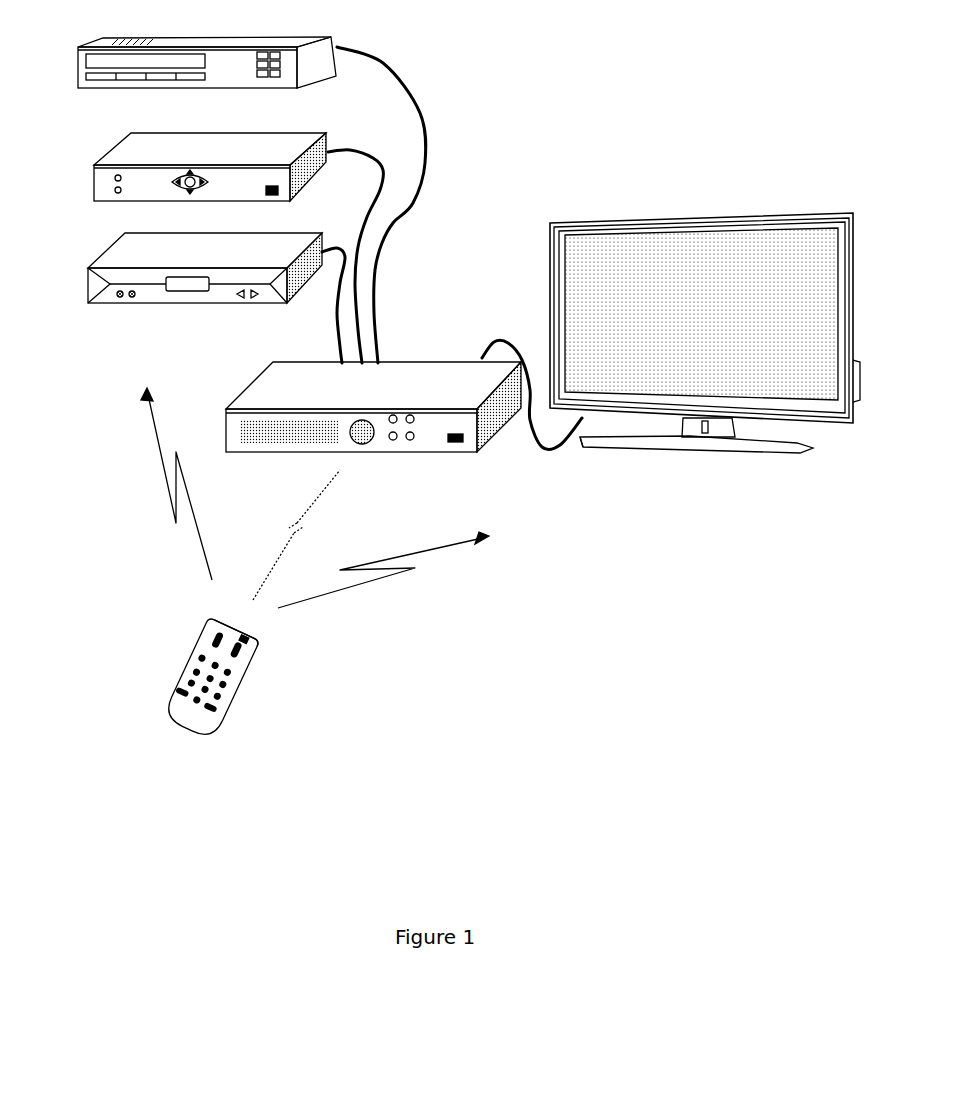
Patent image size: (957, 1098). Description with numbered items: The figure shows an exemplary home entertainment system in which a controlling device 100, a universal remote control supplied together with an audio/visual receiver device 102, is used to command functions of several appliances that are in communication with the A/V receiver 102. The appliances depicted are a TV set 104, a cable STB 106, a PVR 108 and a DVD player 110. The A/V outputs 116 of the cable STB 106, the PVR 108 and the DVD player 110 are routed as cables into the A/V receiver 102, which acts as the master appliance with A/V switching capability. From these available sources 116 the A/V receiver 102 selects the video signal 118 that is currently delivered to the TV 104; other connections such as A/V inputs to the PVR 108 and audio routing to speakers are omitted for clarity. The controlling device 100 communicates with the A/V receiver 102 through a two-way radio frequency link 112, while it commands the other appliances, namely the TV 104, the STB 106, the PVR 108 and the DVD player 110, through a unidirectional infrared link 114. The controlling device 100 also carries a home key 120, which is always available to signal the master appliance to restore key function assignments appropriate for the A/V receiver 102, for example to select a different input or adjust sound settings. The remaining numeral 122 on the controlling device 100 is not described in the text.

The controlling device 100 is at (243, 690).
The A/V receiver device 102 is at (298, 357).
The TV set 104 is at (713, 215).
The cable STB 106 is at (223, 33).
The PVR 108 is at (118, 137).
The DVD player 110 is at (118, 240).
The two-way radio frequency (RF) link 112 is at (333, 481).
The unidirectional infrared (IR) link 114 is at (153, 440).
The A/V outputs 116 is at (341, 327).
The video signal 118 is at (548, 456).
The home key 120 is at (243, 620).
The infrared emitter 122 is at (258, 645).